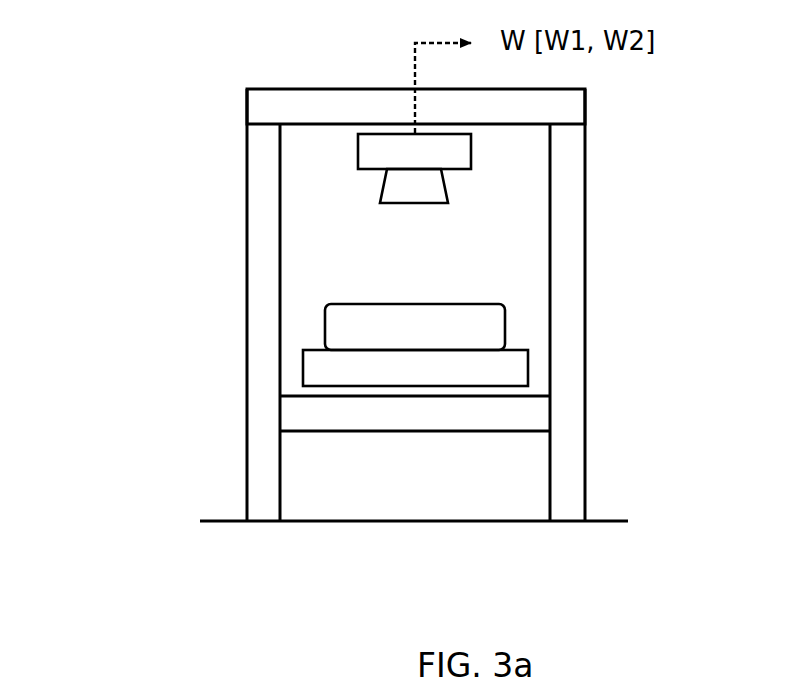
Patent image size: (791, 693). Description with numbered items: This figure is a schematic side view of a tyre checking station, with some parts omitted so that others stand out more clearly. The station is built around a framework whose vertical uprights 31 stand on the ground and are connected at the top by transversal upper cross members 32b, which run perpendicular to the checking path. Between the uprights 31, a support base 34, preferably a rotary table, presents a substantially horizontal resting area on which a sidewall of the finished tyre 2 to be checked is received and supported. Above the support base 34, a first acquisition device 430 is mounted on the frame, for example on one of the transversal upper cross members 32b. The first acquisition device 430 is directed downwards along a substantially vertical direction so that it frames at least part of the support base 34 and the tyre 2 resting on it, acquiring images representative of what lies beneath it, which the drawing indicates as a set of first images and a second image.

The tyre 2 is at (488, 327).
The vertical uprights 31 is at (257, 283).
The transversal upper cross members 32b is at (279, 107).
The support base 34 is at (309, 363).
The first acquisition device 430 is at (350, 164).